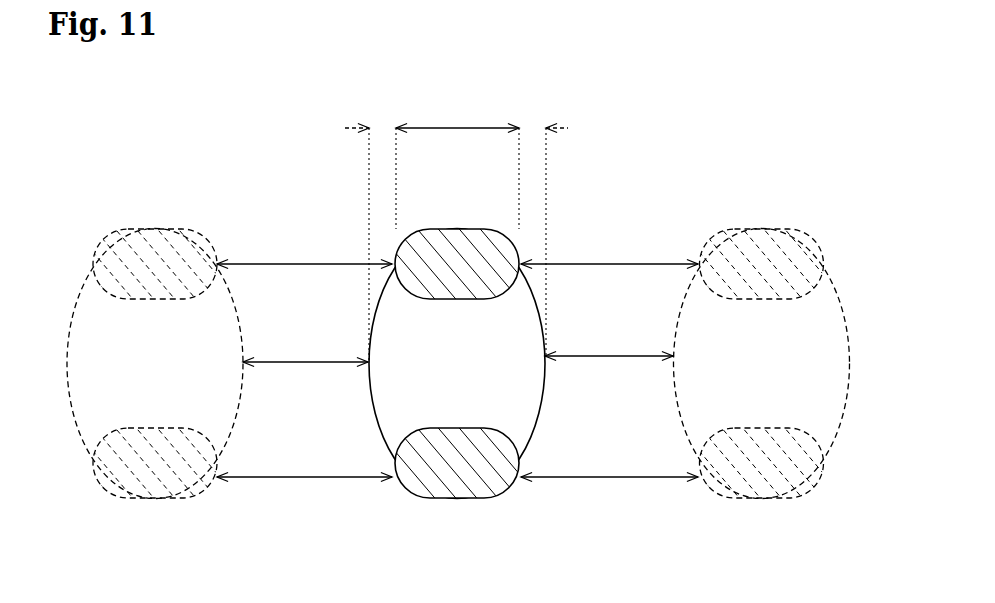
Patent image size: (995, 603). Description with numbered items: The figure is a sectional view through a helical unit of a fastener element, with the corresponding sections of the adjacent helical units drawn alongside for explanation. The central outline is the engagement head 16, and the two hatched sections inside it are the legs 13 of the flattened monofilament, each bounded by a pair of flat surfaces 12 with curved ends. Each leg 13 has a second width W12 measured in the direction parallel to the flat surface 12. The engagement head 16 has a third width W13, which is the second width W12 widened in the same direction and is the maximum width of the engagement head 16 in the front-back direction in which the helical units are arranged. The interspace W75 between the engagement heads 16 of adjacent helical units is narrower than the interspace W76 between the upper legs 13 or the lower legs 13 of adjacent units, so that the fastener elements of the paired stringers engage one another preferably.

The flat surface 12 is at (427, 228).
The leg 13 is at (474, 233).
The engagement head 16 is at (516, 380).
The second width W12 is at (457, 114).
The third width W13 is at (435, 128).
The interspace between engagement heads W75 is at (458, 344).
The interspace between legs W76 is at (457, 355).